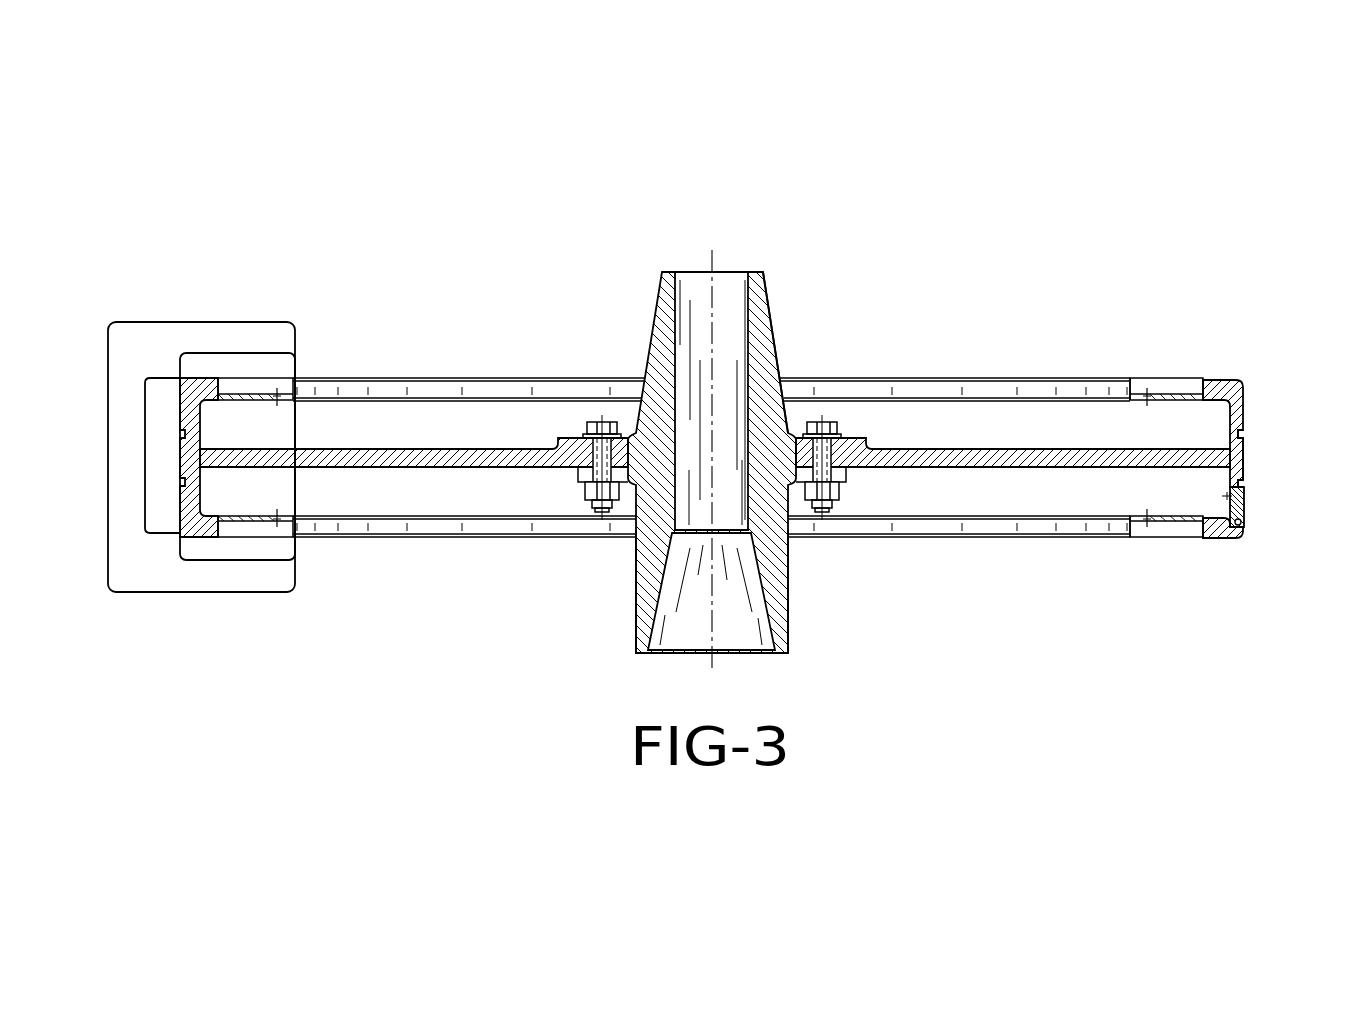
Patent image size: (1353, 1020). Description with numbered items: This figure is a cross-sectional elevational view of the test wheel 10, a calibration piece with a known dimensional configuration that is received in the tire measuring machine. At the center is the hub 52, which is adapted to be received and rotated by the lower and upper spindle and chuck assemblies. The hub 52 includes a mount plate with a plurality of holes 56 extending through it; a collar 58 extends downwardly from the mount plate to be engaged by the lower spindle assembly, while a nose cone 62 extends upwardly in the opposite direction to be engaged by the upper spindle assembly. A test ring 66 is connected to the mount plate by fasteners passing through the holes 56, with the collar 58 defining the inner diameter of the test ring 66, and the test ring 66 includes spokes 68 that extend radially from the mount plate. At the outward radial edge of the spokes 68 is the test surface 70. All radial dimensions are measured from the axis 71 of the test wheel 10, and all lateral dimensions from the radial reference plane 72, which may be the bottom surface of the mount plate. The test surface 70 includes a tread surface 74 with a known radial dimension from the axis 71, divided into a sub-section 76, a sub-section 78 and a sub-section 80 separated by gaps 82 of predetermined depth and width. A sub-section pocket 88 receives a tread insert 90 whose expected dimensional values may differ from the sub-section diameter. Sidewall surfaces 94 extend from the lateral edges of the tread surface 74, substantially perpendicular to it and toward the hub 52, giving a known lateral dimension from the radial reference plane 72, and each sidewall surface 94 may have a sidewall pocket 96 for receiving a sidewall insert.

The test wheel 10 is at (975, 203).
The hub 52 is at (709, 456).
The holes 56 is at (823, 450).
The collar 58 is at (787, 610).
The nose cone 62 is at (768, 300).
The test ring 66 is at (1102, 332).
The spokes 68 is at (317, 455).
The test surface 70 is at (97, 448).
The axis 71 is at (713, 297).
The radial reference plane 72 is at (473, 467).
The tread surface 74 is at (143, 458).
The sub-section 76 is at (1250, 398).
The sub-section 78 is at (1248, 457).
The sub-section 80 is at (178, 503).
The gap 82 is at (1252, 428).
The sub-section pocket 88 is at (1245, 517).
The tread insert 90 is at (1242, 507).
The sidewall surface 94 is at (238, 353).
The sidewall pocket 96 is at (245, 397).